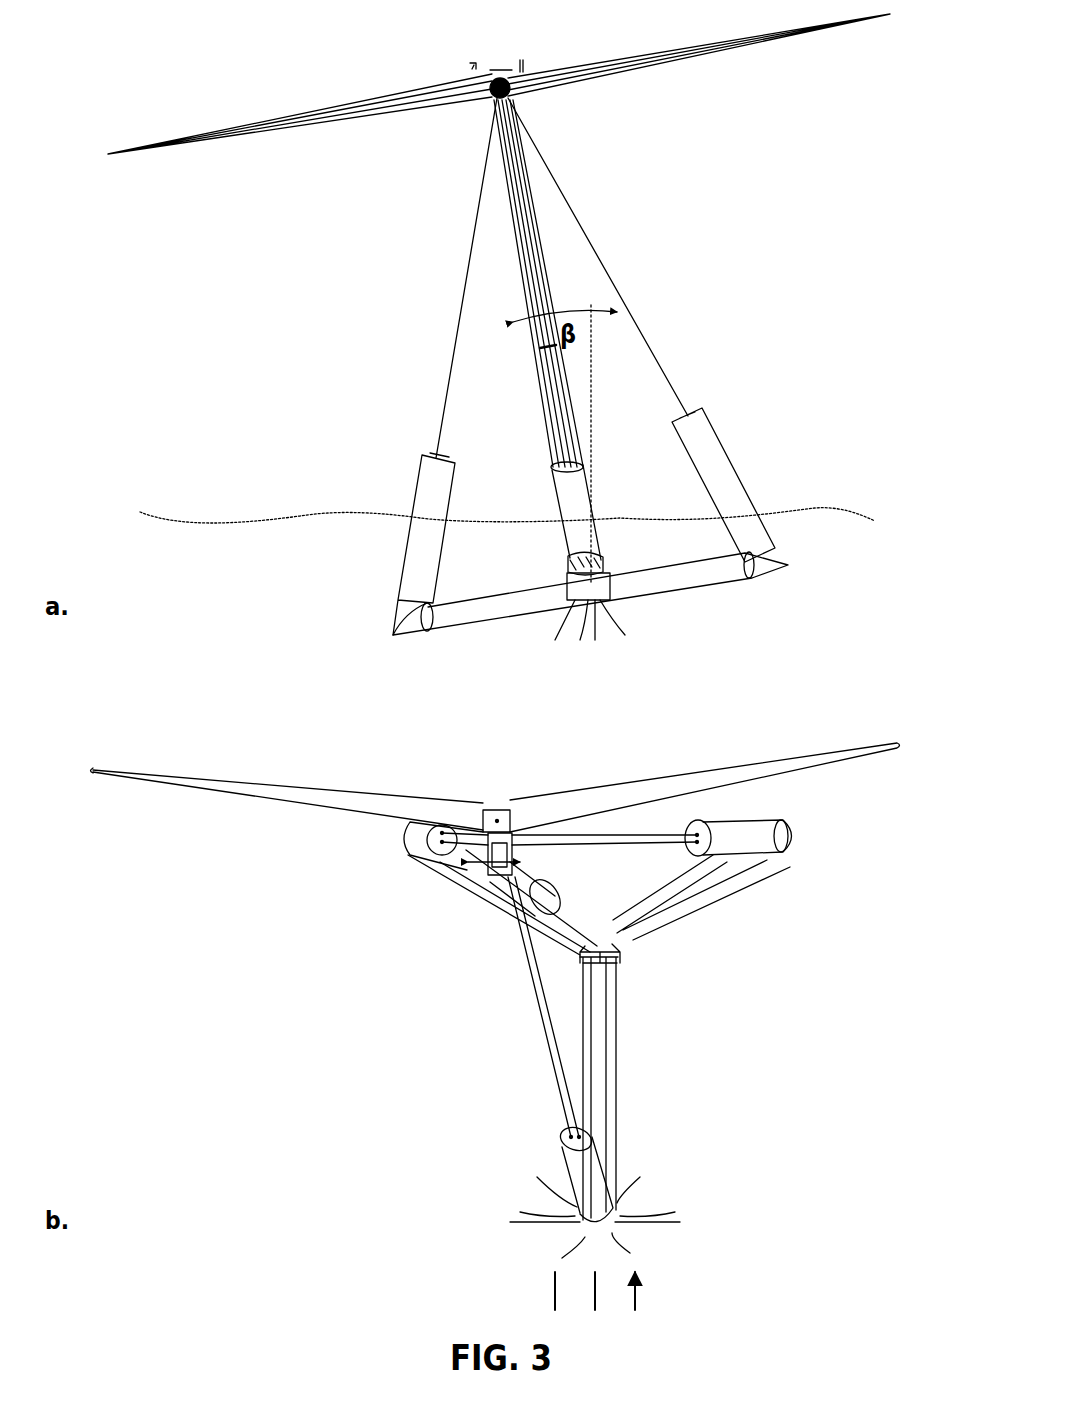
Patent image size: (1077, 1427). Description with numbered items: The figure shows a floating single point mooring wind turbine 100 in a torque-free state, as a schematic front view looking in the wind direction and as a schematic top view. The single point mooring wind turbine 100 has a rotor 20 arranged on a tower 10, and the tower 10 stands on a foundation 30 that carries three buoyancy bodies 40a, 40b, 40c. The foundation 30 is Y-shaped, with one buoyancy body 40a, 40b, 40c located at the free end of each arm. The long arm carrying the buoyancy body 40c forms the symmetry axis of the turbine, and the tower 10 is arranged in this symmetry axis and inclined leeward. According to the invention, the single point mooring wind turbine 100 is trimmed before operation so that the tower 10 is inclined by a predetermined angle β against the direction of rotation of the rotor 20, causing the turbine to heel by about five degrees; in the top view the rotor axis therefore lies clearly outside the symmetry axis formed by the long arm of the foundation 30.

The tower 10 is at (517, 176).
The rotor 20 is at (493, 72).
The foundation 30 is at (540, 614).
The buoyancy body 40a is at (423, 477).
The buoyancy body 40b is at (703, 433).
The buoyancy body 40c is at (587, 523).
The single point mooring wind turbine 100 is at (222, 347).